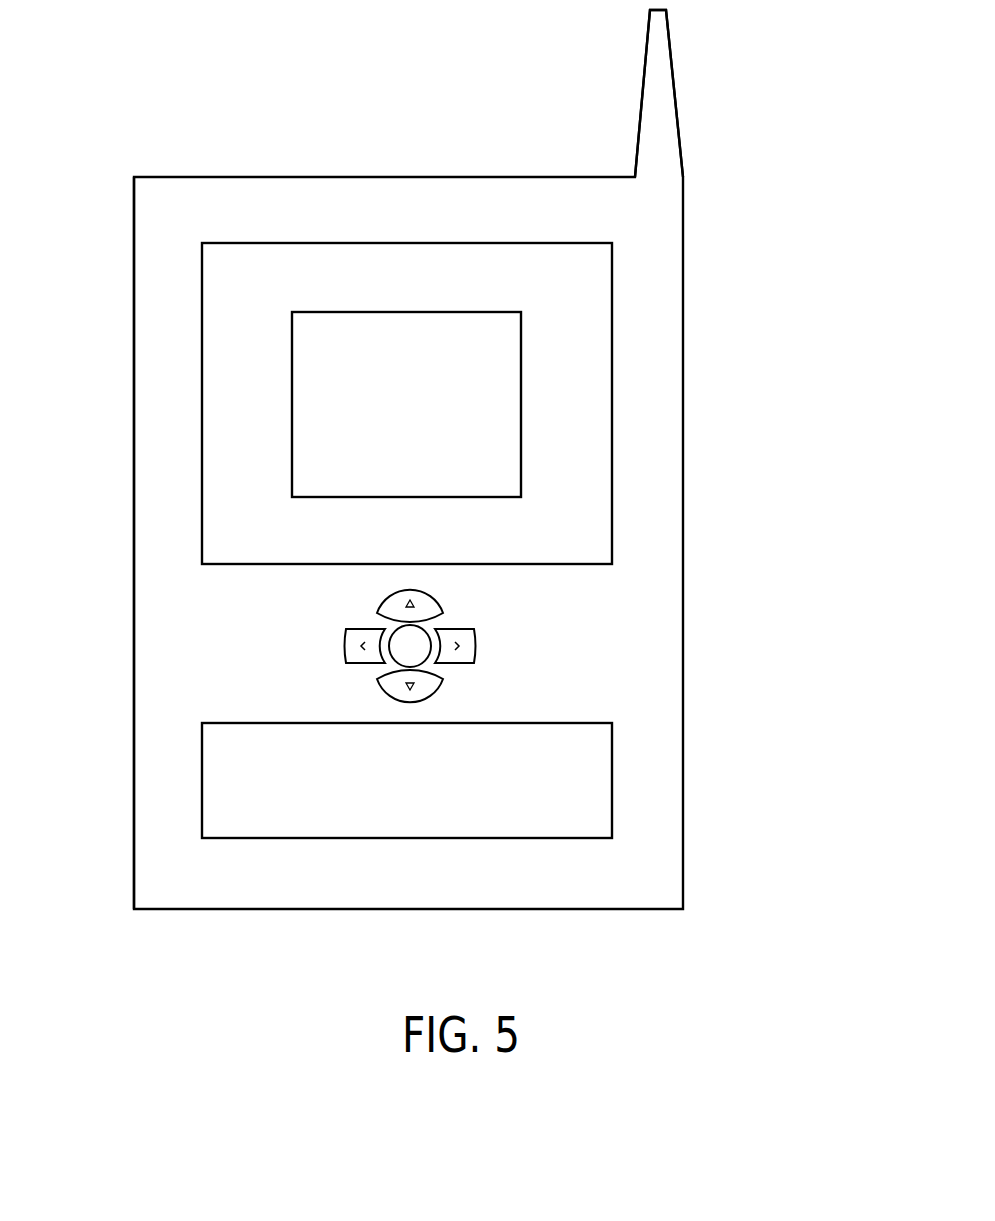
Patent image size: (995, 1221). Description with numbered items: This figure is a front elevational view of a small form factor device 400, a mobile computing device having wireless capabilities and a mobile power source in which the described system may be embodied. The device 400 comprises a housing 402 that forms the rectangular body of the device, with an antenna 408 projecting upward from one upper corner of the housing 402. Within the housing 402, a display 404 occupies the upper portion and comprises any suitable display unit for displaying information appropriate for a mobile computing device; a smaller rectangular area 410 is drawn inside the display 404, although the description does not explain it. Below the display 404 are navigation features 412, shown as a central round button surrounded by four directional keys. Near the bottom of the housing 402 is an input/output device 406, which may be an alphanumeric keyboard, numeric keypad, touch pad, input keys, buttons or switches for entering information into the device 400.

The small form factor device 400 is at (135, 114).
The housing 402 is at (134, 634).
The display 404 is at (612, 302).
The input/output (I/O) device 406 is at (612, 780).
The antenna 408 is at (642, 95).
The display window 410 is at (407, 311).
The navigation features 412 is at (511, 646).